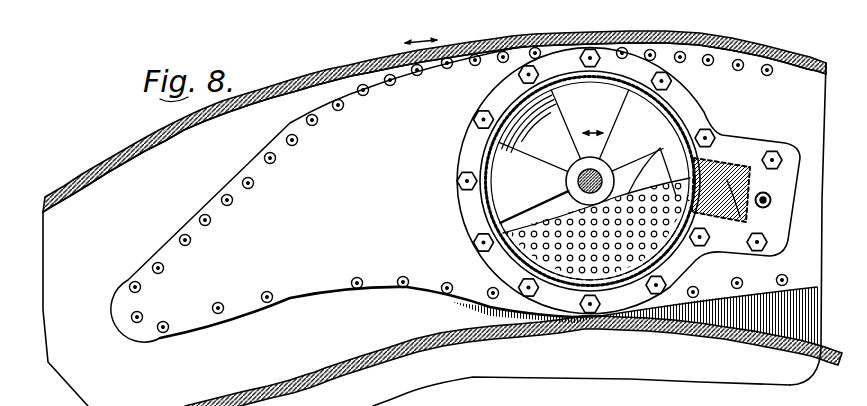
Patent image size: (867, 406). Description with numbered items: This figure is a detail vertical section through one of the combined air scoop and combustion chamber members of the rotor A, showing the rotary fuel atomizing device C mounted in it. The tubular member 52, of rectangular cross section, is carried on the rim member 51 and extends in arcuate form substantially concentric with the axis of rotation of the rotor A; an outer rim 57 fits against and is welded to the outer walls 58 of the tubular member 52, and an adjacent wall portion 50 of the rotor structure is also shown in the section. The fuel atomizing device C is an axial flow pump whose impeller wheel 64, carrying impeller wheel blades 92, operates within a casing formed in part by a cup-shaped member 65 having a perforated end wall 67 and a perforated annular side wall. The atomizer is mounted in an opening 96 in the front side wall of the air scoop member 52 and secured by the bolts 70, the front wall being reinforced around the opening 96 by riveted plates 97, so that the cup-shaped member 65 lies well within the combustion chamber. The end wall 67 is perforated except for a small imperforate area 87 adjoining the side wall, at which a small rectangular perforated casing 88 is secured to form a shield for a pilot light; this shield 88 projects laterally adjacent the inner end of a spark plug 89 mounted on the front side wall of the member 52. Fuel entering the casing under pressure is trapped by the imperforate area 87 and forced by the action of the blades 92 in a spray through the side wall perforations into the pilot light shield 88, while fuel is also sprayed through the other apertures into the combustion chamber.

The lower body wall 50 is at (652, 380).
The rim member 51 is at (750, 343).
The tubular member 52 is at (257, 107).
The outer rim 57 is at (93, 171).
The outer walls 58 is at (147, 153).
The impeller wheel 64 is at (516, 162).
The cup-shaped member 65 is at (512, 255).
The end wall 67 is at (525, 231).
The bolts 70 is at (705, 130).
The imperforate area 87 is at (662, 157).
The pilot light shield 88 is at (733, 167).
The spark plug 89 is at (773, 212).
The impeller wheel blades 92 is at (530, 162).
The opening 96 is at (515, 105).
The plates 97 is at (401, 290).
The rotor A is at (123, 147).
The fuel atomizing device C is at (476, 120).